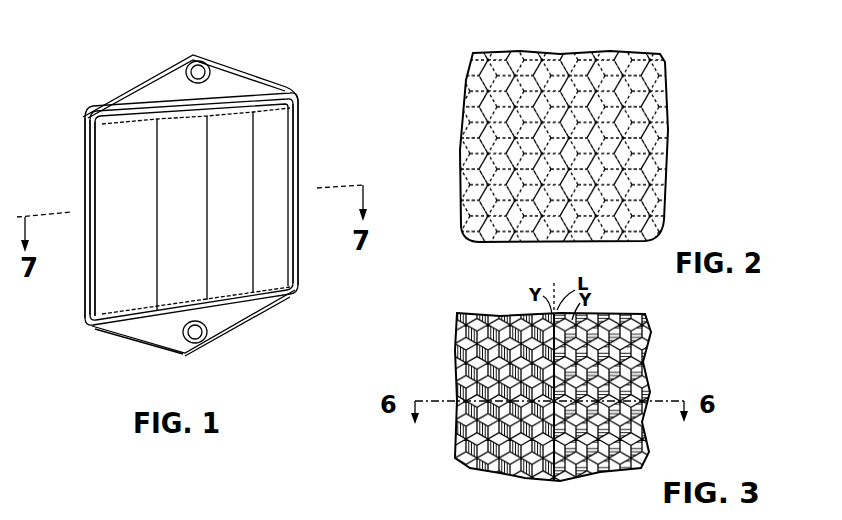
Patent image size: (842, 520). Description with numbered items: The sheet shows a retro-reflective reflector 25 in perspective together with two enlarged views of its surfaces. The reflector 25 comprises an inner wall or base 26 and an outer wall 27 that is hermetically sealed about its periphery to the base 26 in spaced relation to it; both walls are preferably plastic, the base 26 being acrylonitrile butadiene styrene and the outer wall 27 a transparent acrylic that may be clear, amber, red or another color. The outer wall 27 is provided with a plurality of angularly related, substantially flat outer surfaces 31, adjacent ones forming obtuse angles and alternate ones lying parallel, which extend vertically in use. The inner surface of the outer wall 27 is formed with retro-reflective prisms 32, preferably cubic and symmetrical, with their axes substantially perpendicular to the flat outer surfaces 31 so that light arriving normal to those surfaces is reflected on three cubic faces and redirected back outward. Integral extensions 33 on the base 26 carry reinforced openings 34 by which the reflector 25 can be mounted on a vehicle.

In FIG. 1, the reflector 25 is at (266, 78).
In FIG. 1, the inner wall or base 26 is at (84, 140).
In FIG. 1, the outer wall 27 is at (293, 135).
In FIG. 2, the flat outer surfaces 31 is at (665, 122).
In FIG. 3, the retro-reflective prisms 32 is at (647, 357).
In FIG. 1, the integral extensions 33 is at (225, 70).
In FIG. 1, the reinforced openings 34 is at (194, 62).